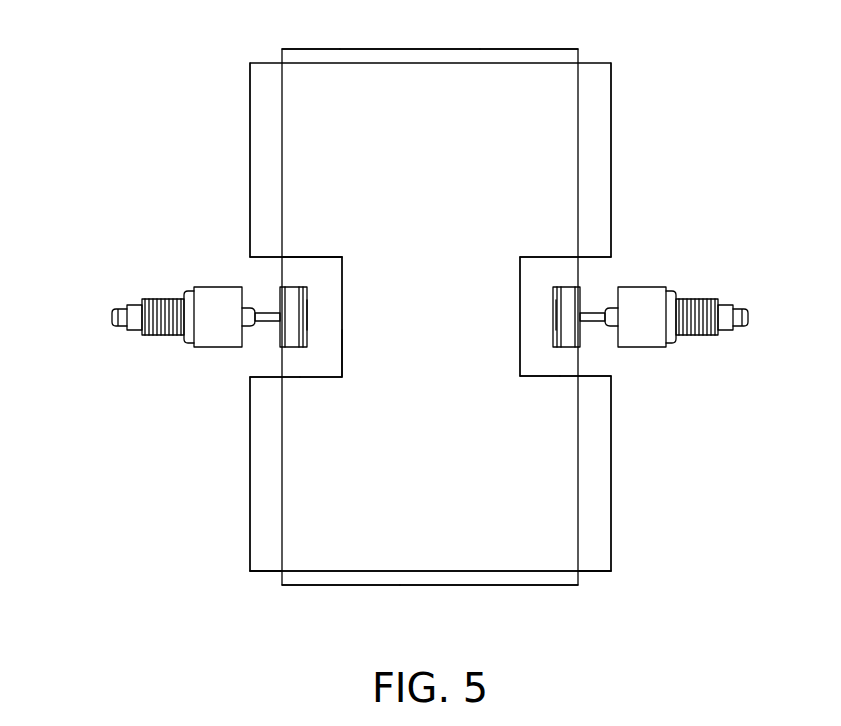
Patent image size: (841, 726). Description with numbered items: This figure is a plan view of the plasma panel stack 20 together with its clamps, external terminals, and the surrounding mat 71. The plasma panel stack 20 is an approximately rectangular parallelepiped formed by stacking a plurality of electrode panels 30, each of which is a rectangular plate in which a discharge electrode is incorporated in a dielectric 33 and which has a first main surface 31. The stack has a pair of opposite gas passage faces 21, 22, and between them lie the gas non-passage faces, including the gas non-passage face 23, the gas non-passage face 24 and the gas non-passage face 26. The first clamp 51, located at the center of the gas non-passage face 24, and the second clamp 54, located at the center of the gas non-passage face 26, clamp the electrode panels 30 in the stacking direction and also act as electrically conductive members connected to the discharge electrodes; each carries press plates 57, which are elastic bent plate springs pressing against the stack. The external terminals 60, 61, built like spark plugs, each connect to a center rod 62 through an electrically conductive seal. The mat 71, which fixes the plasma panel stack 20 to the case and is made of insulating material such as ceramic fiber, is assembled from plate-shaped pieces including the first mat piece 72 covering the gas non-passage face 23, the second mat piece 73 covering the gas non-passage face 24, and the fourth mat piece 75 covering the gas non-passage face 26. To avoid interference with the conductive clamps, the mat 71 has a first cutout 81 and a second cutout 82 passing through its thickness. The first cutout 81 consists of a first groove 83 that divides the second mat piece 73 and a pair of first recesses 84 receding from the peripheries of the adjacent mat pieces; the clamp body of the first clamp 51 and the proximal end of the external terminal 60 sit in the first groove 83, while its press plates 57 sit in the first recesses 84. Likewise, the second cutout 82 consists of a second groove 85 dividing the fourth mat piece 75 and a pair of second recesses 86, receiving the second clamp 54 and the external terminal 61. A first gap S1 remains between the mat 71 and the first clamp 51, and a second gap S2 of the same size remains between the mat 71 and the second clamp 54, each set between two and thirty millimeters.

The plasma panel stack 20 is at (567, 48).
The gas passage face 21 is at (335, 597).
The gas passage face 22 is at (486, 38).
The gas non-passage face 23 is at (324, 52).
The gas non-passage face 24 is at (590, 578).
The gas non-passage face 26 is at (270, 584).
The electrode panel 30 is at (405, 56).
The first main surface 31 is at (314, 257).
The dielectric 33 is at (512, 580).
The first clamp 51 is at (556, 308).
The second clamp 54 is at (307, 312).
The press plate 57 is at (293, 340).
The external terminal 60 is at (752, 316).
The external terminal 61 is at (110, 316).
The center rod 62 is at (265, 320).
The mat 71 is at (611, 110).
The first mat piece 72 is at (413, 560).
The second mat piece 73 is at (598, 183).
The fourth mat piece 75 is at (265, 150).
The first cutout 81 is at (603, 267).
The second cutout 82 is at (260, 262).
The first groove 83 is at (603, 369).
The first recess 84 is at (545, 367).
The second groove 85 is at (252, 368).
The second recess 86 is at (322, 372).
The first gap S1 is at (527, 360).
The second gap S2 is at (342, 356).